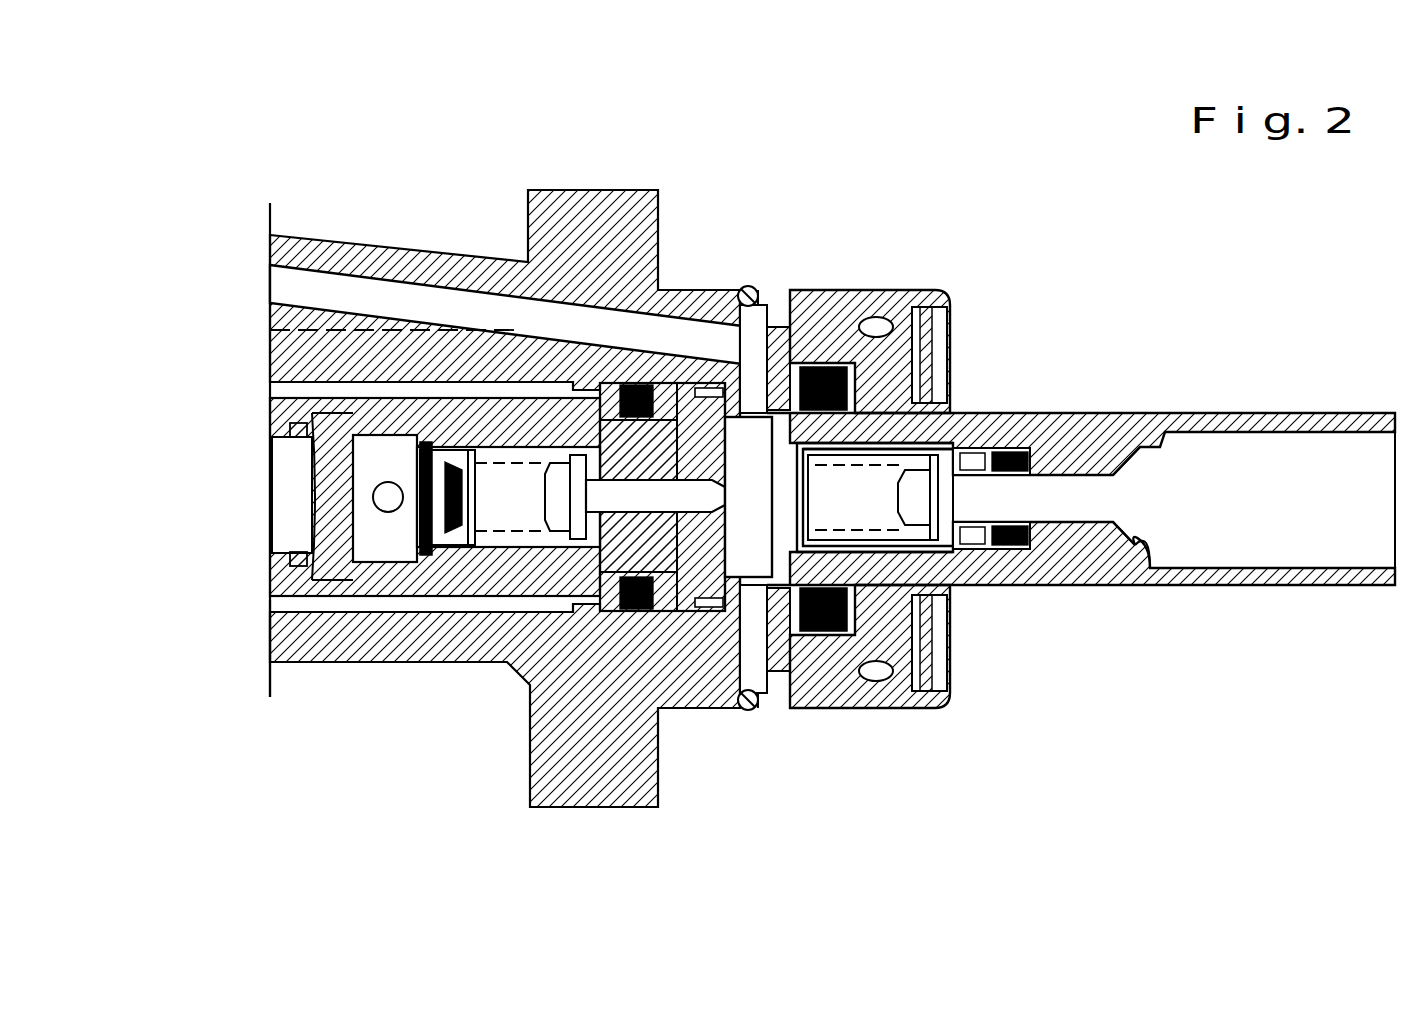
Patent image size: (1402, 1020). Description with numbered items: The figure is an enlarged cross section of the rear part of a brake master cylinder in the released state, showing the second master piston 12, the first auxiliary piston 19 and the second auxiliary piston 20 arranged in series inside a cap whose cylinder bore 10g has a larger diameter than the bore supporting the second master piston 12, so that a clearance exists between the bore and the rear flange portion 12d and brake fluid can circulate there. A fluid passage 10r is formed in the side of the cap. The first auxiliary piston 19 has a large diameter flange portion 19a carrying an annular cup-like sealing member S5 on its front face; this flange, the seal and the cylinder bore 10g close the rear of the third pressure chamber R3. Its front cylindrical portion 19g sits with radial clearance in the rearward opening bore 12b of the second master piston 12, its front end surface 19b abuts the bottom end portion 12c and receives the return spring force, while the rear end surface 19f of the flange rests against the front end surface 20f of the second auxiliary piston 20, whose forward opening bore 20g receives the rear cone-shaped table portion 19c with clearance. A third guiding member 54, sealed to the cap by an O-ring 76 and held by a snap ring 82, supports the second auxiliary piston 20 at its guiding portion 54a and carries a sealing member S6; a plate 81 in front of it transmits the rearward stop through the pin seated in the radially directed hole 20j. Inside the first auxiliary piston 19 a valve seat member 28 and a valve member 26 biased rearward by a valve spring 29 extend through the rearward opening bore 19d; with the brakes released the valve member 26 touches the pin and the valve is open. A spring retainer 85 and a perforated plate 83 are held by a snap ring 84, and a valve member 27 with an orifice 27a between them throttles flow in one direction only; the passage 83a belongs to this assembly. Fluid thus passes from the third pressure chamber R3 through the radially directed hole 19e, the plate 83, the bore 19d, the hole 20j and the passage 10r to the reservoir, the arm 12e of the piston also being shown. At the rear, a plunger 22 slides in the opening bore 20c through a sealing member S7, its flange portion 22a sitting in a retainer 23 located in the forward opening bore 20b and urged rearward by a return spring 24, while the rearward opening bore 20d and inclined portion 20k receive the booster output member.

The fluid passage 10r is at (303, 282).
The cylinder bore 10g is at (297, 615).
The second master piston 12 is at (317, 455).
The rearward opening bore 12b is at (505, 560).
The bottom end portion 12c is at (370, 520).
The rear flange portion 12d is at (580, 540).
The piston arm 12e is at (318, 328).
The first auxiliary piston 19 is at (507, 380).
The large diameter flange portion 19a is at (667, 540).
The front end surface 19b is at (292, 445).
The rear cone-shaped table portion 19c is at (700, 585).
The rearward opening bore 19d is at (605, 555).
The radially directed hole 19e is at (358, 600).
The rear end surface 19f is at (700, 390).
The cylindrical portion 19g is at (400, 590).
The second auxiliary piston 20 is at (1143, 413).
The forward opening bore 20b is at (746, 712).
The opening bore 20c is at (1048, 480).
The rearward opening bore 20d is at (1290, 432).
The front end surface 20f is at (664, 390).
The forward opening bore 20g is at (770, 288).
The radially directed hole 20j is at (763, 712).
The inclined portion 20k is at (1150, 582).
The plunger 22 is at (1032, 462).
The flange portion 22a is at (1008, 560).
The retainer 23 is at (958, 600).
The return spring 24 is at (825, 640).
The valve member 26 is at (548, 515).
The valve member 27 is at (452, 430).
The orifice 27a is at (455, 560).
The valve seat member 28 is at (582, 388).
The valve spring 29 is at (498, 440).
The third guiding member 54 is at (890, 640).
The guiding portion 54a is at (948, 440).
The O-ring 76 is at (880, 305).
The plate 81 is at (780, 325).
The snap ring 82 is at (947, 290).
The plate 83 is at (435, 440).
The detent spring 83a is at (432, 565).
The snap ring 84 is at (415, 425).
The spring retainer 85 is at (468, 440).
The third pressure chamber R3 is at (296, 390).
The annular cup-like sealing member S5 is at (604, 385).
The annular cup-like sealing member S6 is at (822, 340).
The annular cup-like sealing member S7 is at (1020, 560).